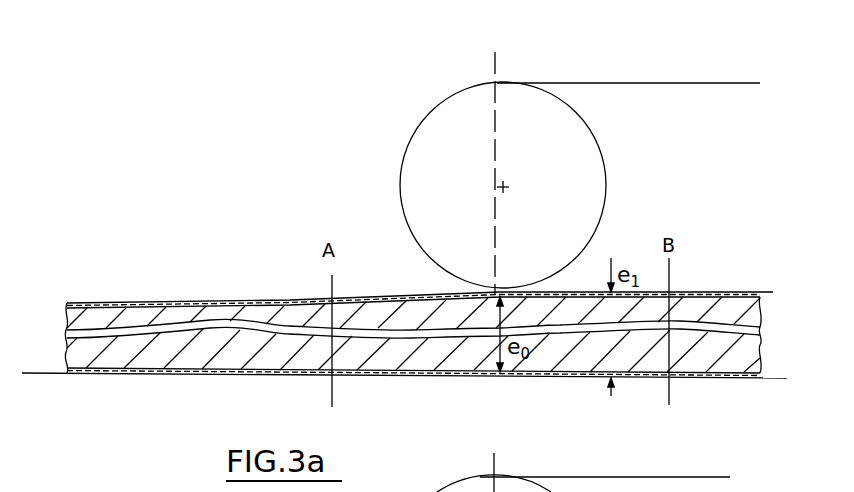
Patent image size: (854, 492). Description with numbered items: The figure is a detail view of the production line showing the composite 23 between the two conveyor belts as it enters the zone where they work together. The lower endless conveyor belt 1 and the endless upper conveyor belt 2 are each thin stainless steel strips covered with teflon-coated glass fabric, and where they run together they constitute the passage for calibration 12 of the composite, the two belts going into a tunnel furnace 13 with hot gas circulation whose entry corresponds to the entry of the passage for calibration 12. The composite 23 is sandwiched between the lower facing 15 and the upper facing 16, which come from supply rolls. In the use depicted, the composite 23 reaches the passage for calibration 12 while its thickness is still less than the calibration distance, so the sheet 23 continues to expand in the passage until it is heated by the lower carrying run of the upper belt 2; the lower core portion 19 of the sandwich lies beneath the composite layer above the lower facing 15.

The endless conveyor belt 1 is at (60, 377).
The endless upper conveyor belt 2 is at (620, 82).
The passage for calibration 12 is at (440, 283).
The tunnel furnace 13 is at (494, 117).
The lower facing 15 is at (140, 377).
The upper facing 16 is at (225, 300).
The lower core layer 19 is at (205, 357).
The composite 23 is at (312, 320).